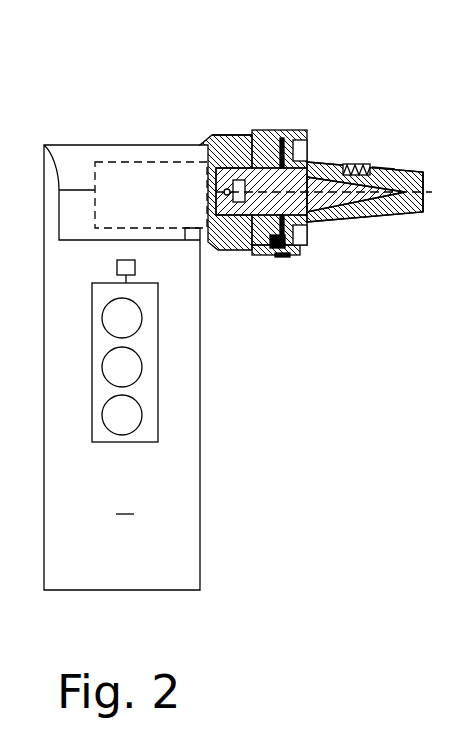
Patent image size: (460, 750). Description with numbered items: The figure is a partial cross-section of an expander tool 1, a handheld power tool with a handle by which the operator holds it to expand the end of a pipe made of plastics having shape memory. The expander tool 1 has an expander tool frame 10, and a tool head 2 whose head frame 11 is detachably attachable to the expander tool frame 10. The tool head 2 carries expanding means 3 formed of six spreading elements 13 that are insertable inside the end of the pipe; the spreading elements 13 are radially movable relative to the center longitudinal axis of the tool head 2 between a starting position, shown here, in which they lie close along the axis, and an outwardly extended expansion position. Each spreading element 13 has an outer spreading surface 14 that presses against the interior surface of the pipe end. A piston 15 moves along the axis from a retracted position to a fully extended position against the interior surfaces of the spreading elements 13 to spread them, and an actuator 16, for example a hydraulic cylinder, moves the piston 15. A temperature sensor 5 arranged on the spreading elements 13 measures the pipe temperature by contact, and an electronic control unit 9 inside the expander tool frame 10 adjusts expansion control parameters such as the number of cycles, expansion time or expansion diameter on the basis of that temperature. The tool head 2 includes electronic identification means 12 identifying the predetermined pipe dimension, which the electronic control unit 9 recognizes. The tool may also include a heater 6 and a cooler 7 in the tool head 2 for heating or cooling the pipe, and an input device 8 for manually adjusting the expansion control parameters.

The expander tool 1 is at (105, 145).
The tool head 2 is at (272, 132).
The expanding means 3 is at (398, 167).
The temperature sensor 5 is at (420, 172).
The heater 6 is at (355, 164).
The cooler 7 is at (389, 166).
The input device 8 is at (158, 357).
The electronic control unit 9 is at (135, 268).
The expander tool frame 10 is at (232, 247).
The head frame 11 is at (268, 255).
The electronic identification means 12 is at (288, 240).
The spreading elements 13 is at (410, 170).
The outer spreading surface 14 is at (408, 228).
The piston 15 is at (253, 146).
The actuator 16 is at (142, 162).